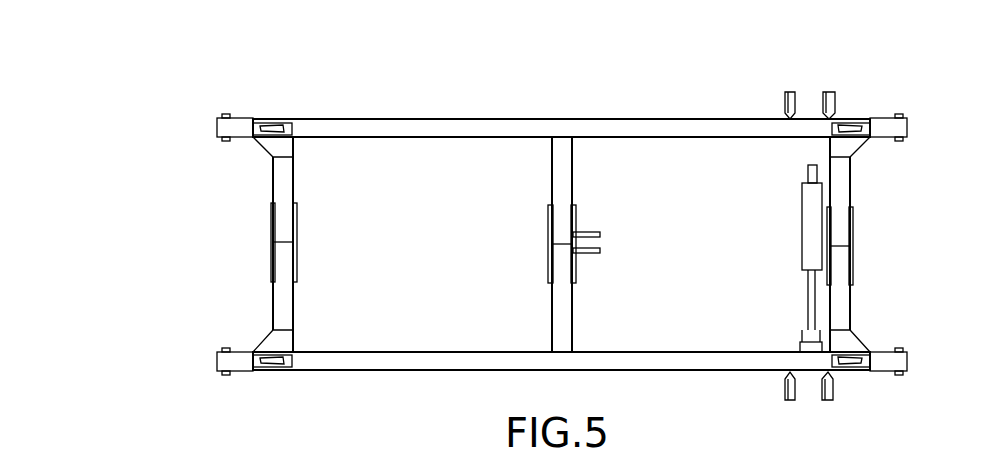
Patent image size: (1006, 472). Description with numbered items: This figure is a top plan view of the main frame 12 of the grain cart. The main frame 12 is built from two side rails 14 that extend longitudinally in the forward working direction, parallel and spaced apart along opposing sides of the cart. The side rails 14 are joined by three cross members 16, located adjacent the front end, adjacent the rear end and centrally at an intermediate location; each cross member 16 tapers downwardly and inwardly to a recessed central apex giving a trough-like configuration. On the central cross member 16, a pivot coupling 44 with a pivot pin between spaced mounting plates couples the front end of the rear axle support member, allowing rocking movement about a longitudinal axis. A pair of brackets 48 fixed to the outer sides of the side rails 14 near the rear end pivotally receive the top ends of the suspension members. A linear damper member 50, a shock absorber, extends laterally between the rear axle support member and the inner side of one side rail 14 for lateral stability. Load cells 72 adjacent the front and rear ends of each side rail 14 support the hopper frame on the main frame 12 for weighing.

The main frame 12 is at (86, 240).
The side rails 14 is at (460, 120).
The cross members 16 is at (295, 173).
The pivot coupling 44 is at (600, 243).
The brackets 48 is at (785, 103).
The linear damper member 50 is at (803, 230).
The load cells 72 is at (275, 118).